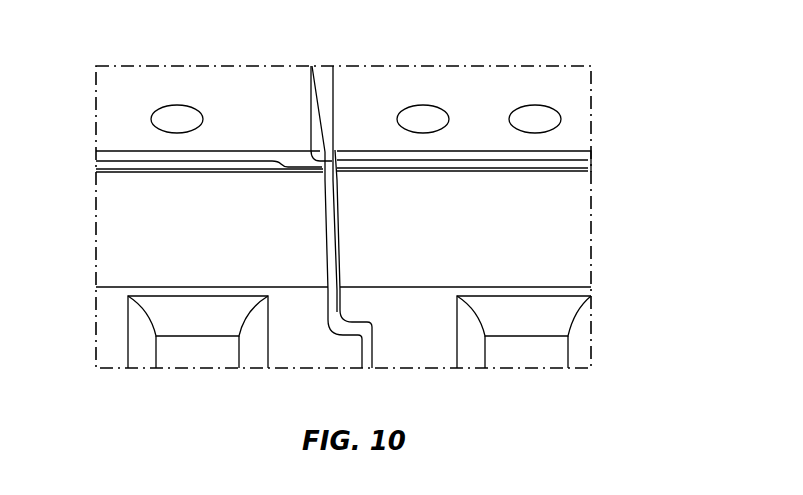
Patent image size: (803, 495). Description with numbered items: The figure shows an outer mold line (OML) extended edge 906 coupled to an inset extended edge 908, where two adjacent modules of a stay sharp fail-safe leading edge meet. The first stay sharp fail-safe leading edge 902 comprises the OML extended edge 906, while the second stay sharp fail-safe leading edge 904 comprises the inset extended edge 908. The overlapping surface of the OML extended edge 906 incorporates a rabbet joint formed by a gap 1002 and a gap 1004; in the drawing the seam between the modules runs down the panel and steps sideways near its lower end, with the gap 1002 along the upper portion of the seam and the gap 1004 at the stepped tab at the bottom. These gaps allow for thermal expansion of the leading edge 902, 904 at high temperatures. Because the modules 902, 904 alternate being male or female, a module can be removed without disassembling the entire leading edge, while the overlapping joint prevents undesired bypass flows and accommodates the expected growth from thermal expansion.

The first stay sharp fail-safe leading edge 902 is at (583, 227).
The second stay sharp fail-safe leading edge 904 is at (110, 232).
The outer mold line (OML) extended edge 906 is at (349, 151).
The inset extended edge 908 is at (352, 365).
The gap 1002 is at (312, 66).
The gap 1004 is at (382, 367).